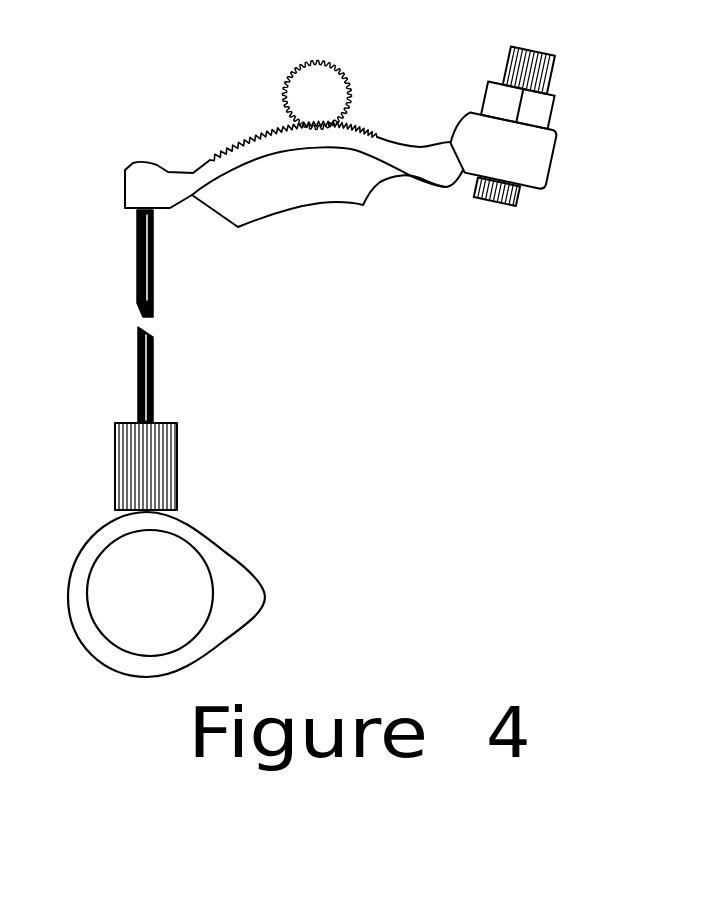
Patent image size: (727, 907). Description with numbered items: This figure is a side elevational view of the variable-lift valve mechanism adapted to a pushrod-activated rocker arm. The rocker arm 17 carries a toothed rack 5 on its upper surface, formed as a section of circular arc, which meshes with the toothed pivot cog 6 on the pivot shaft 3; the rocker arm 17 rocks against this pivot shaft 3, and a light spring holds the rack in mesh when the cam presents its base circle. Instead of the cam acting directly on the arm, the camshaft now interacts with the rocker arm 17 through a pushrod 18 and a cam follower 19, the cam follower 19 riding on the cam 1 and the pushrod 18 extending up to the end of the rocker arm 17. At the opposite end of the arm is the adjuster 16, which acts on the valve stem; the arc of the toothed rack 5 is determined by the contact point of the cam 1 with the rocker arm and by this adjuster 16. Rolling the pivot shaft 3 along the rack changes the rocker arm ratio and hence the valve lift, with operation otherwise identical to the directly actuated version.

The cam 1 is at (267, 592).
The pivot shaft 3 is at (305, 98).
The toothed rack 5 is at (373, 132).
The toothed pivot cog 6 is at (348, 82).
The adjuster 16 is at (477, 190).
The rocker arm 17 is at (195, 175).
The pushrod 18 is at (152, 362).
The cam follower 19 is at (178, 475).